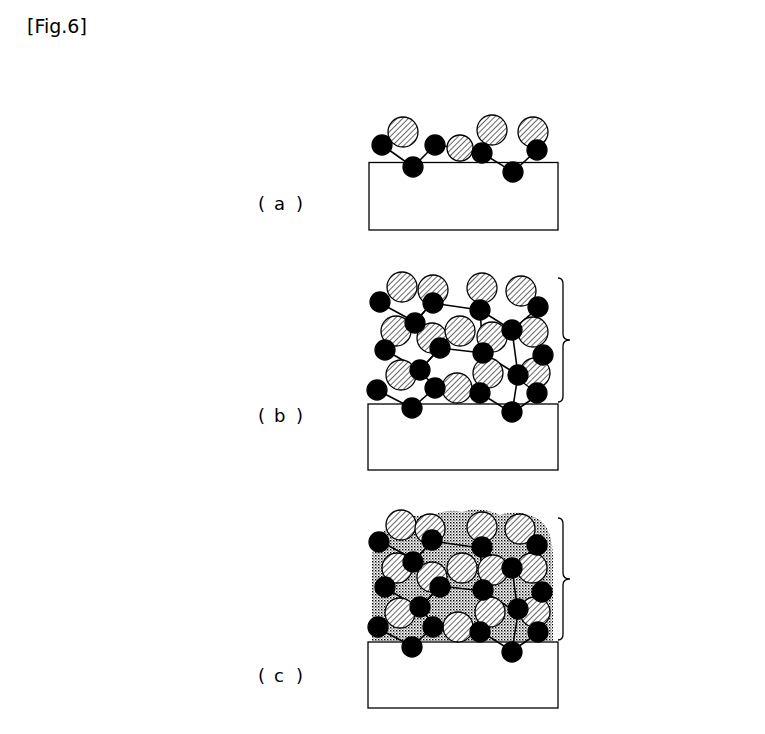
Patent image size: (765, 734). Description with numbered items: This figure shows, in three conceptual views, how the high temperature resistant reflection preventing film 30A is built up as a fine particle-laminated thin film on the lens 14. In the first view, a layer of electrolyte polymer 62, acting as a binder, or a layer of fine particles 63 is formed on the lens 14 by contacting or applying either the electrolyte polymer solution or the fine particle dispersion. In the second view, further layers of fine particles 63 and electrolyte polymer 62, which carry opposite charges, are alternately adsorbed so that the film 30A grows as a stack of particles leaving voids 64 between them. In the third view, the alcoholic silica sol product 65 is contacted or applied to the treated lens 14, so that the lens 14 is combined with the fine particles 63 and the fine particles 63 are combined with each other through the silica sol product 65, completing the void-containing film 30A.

The lens 14 is at (543, 200).
The electrolyte polymer 62 is at (548, 152).
The fine particles 63 is at (542, 127).
The voids 64 is at (578, 632).
The alcoholic silica sol product 65 is at (447, 517).
The high temperature resistant reflection preventing film 30A is at (503, 460).